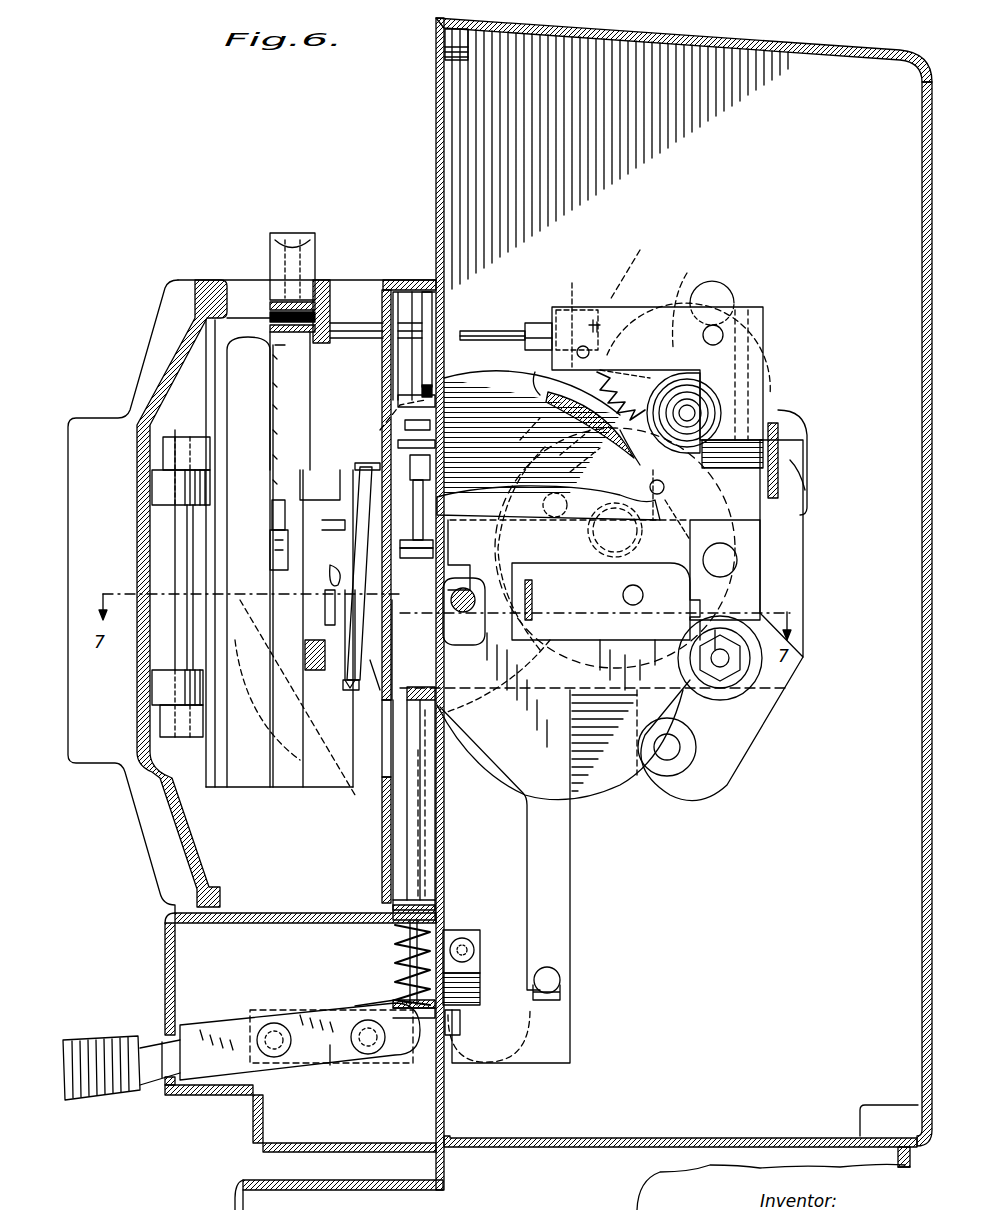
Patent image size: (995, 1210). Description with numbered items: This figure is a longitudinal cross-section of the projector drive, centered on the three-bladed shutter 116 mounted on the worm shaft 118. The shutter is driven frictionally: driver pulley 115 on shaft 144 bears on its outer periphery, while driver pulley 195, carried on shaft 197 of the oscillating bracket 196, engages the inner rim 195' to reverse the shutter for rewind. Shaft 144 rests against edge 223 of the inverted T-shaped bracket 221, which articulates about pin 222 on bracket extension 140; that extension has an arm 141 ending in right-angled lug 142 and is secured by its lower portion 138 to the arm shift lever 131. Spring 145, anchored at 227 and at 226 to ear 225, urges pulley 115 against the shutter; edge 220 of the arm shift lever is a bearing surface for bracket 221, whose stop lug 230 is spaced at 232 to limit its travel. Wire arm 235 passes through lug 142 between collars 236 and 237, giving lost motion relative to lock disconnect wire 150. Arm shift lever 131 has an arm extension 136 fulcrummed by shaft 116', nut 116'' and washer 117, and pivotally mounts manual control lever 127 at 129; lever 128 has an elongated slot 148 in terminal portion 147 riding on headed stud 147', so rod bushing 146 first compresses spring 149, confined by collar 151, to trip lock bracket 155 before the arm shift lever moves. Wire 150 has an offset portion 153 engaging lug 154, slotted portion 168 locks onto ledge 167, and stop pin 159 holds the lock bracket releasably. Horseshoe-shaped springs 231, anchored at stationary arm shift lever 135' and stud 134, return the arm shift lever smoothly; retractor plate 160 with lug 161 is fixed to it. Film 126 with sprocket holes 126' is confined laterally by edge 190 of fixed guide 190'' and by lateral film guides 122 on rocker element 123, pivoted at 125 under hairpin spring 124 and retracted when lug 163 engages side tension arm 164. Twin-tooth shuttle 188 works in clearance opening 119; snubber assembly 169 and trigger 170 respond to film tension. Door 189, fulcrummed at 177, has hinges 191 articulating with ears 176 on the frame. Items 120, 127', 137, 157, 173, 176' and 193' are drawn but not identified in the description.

The driver pulley 115 is at (604, 388).
The three-bladed shutter 116 is at (532, 528).
The shaft 116' is at (776, 671).
The nut 116'' is at (765, 692).
The washer 117 is at (745, 680).
The worm shaft 118 is at (476, 600).
The clearance opening 119 is at (272, 510).
The armature body 120 is at (283, 605).
The lateral film guides 122 is at (300, 447).
The rocker element 123 is at (348, 690).
The hairpin spring 124 is at (348, 680).
The pivot 125 is at (321, 607).
The film 126 is at (280, 375).
The sprocket holes 126' is at (251, 419).
The manual control lever 127 is at (121, 1077).
The lever plate 127' is at (344, 1079).
The lever 128 is at (222, 1020).
The pivot 129 is at (280, 1060).
The arm shift lever 131 is at (572, 895).
The stud 134 is at (470, 952).
The stationary arm shift lever 135' is at (515, 963).
The arm extension 136 is at (672, 700).
The cam plate 137 is at (540, 525).
The lower portion 138 is at (760, 512).
The bracket extension 140 is at (770, 340).
The arm 141 is at (690, 290).
The right-angularly bent lug 142 is at (576, 290).
The shaft 144 is at (695, 410).
The spring 145 is at (630, 365).
The rod bushing 146 is at (395, 978).
The terminal portion 147 is at (386, 997).
The headed stud 147' is at (376, 1055).
The elongated slot 148 is at (350, 1005).
The spring 149 is at (395, 950).
The lock disconnect wire 150 is at (405, 800).
The collar 151 is at (437, 912).
The offset portion 153 is at (405, 443).
The lug 154 is at (405, 462).
The lock bracket 155 is at (425, 510).
The link 157 is at (385, 392).
The stop pin 159 is at (408, 425).
The retractor plate 160 is at (446, 600).
The right-angularly formed lug 161 is at (370, 650).
The lug 163 is at (335, 560).
The side tension arm 164 is at (322, 580).
The ledge 167 is at (433, 553).
The slotted portion 168 is at (433, 544).
The snubber assembly 169 is at (303, 229).
The trigger 170 is at (420, 350).
The block 173 is at (410, 395).
The support ears 176 is at (181, 454).
The terminal 176' is at (178, 713).
The fulcrum 177 is at (175, 548).
The twin-tooth shuttle 188 is at (270, 535).
The door 189 is at (143, 495).
The lateral guide edge 190 is at (266, 562).
The fixed guide 190'' is at (295, 697).
The door hinges 191 is at (152, 512).
The rod 193' is at (443, 773).
The driver pulley 195 is at (577, 432).
The inner rim 195' is at (531, 373).
The oscillating bracket 196 is at (800, 465).
The shaft 197 is at (560, 468).
The edge 220 is at (780, 425).
The inverted T-shaped bracket 221 is at (725, 290).
The pin 222 is at (723, 335).
The edge 223 is at (700, 378).
The ear 225 is at (678, 490).
The spring anchor 226 is at (650, 483).
The spring anchorage 227 is at (590, 345).
The stop lug 230 is at (790, 440).
The horseshoe-shaped springs 231 is at (470, 990).
The spacing 232 is at (770, 490).
The wire arm 235 is at (495, 326).
The collar 236 is at (538, 322).
The collar 237 is at (633, 258).